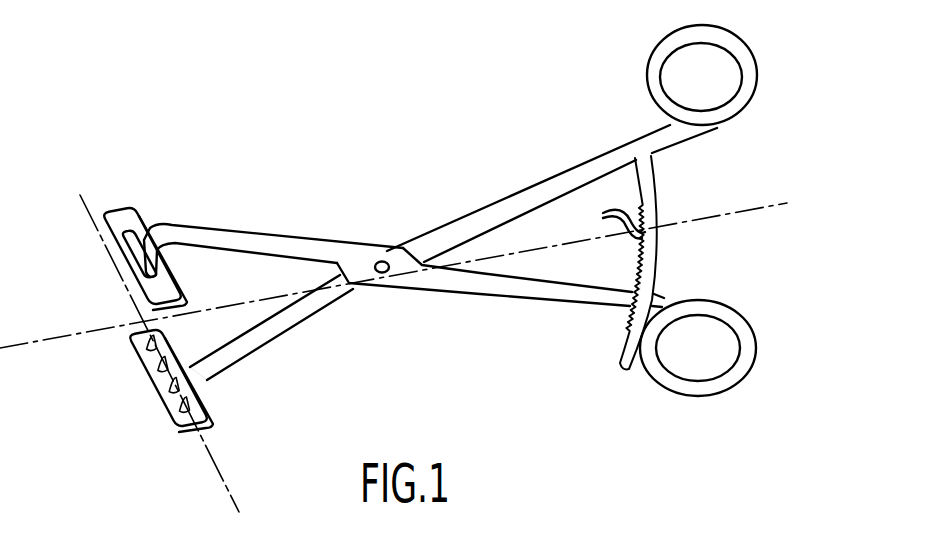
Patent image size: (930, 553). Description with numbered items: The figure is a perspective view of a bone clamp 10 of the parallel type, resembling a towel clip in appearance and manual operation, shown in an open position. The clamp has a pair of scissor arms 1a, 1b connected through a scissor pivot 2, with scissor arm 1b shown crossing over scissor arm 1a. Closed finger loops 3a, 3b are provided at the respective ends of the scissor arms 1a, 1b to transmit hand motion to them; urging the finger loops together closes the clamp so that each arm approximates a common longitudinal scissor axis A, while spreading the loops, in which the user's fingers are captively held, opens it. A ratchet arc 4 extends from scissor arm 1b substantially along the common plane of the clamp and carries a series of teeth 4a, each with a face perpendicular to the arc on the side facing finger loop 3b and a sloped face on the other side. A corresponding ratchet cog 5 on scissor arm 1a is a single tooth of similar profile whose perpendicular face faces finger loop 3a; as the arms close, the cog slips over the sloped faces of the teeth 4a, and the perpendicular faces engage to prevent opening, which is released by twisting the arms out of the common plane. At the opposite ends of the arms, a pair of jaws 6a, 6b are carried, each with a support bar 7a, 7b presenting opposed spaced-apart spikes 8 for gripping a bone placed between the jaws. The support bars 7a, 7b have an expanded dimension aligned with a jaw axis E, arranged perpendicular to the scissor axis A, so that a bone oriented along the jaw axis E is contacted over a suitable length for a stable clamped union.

The scissor arm 1a is at (492, 294).
The scissor arm 1b is at (486, 208).
The scissor pivot 2 is at (381, 261).
The finger loop 3a is at (732, 389).
The finger loop 3b is at (757, 63).
The ratchet arc 4 is at (658, 204).
The teeth 4a is at (610, 218).
The ratchet cog 5 is at (637, 300).
The jaw 6a is at (101, 232).
The jaw 6b is at (157, 413).
The support bar 7a is at (133, 211).
The support bar 7b is at (205, 406).
The spikes 8 is at (172, 392).
The bone clamp 10 is at (307, 184).
The scissor axis A is at (757, 208).
The jaw axis E is at (222, 486).